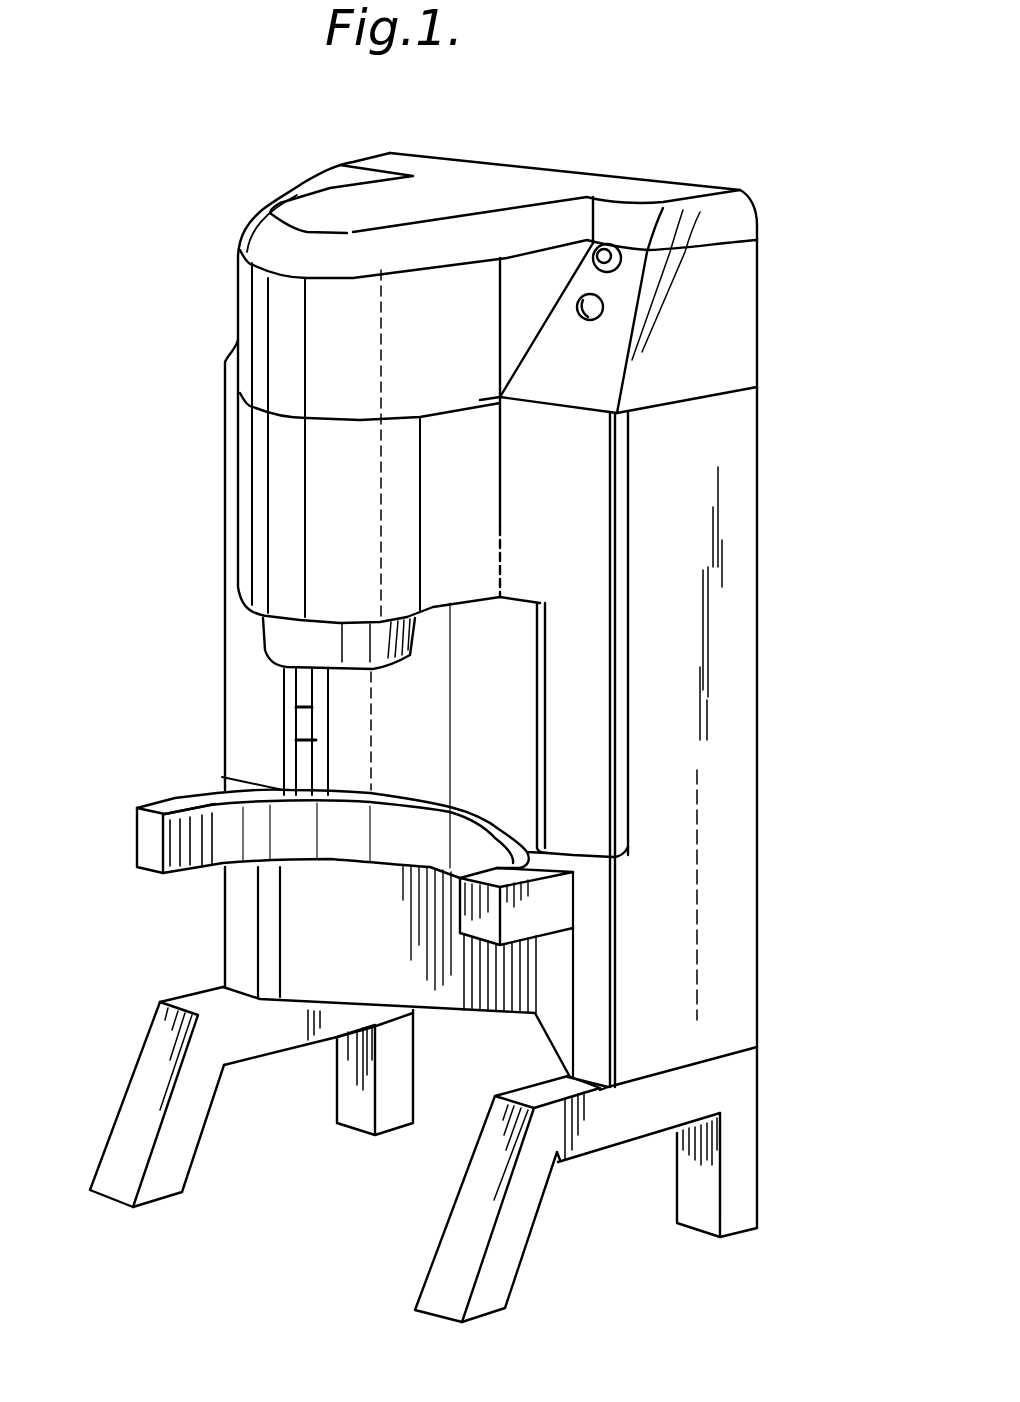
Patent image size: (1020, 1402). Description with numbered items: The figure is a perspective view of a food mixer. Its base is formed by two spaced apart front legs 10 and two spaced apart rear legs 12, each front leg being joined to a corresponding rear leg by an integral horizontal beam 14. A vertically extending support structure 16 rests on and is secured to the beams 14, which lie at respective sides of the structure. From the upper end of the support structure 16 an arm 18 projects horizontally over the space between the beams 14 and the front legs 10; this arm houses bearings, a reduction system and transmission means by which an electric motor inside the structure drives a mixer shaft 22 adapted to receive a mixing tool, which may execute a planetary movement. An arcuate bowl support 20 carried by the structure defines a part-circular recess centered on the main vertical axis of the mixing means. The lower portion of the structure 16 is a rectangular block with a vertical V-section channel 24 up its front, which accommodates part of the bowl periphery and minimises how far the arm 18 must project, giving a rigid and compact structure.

The front leg 10 is at (127, 1137).
The rear leg 12 is at (400, 1068).
The horizontal beam 14 is at (272, 1043).
The support structure 16 is at (718, 708).
The arm 18 is at (255, 502).
The arcuate bowl support 20 is at (237, 827).
The mixer shaft 22 is at (300, 686).
The V-section channel 24 is at (397, 923).